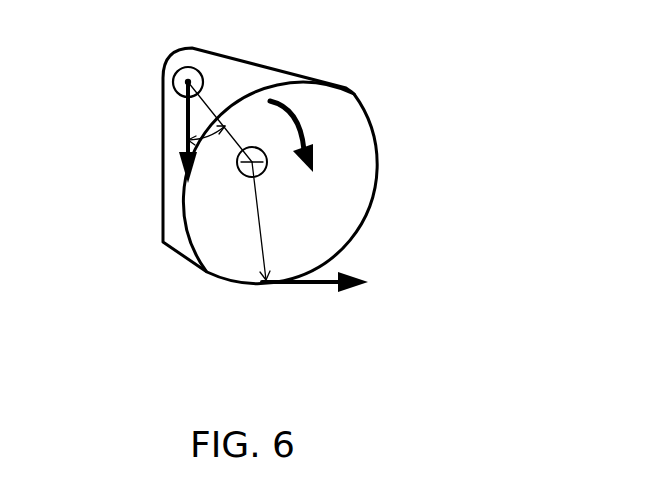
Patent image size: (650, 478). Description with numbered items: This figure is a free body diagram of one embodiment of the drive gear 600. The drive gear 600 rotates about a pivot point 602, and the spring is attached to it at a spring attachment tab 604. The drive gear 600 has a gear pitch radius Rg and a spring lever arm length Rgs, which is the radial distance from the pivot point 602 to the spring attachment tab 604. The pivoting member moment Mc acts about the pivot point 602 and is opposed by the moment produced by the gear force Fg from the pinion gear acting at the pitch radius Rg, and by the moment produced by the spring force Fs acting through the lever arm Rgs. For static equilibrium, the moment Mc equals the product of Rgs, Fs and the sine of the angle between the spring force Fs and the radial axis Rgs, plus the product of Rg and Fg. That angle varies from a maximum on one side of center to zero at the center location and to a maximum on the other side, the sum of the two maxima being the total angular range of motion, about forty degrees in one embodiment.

The drive gear 600 is at (390, 156).
The pivot point 602 is at (268, 166).
The spring attachment tab 604 is at (174, 78).
The spring force Fs is at (191, 151).
The gear force Fg is at (335, 284).
The gear pitch radius Rg is at (263, 225).
The spring lever arm length Rgs is at (247, 148).
The pivoting member moment Mc is at (354, 94).